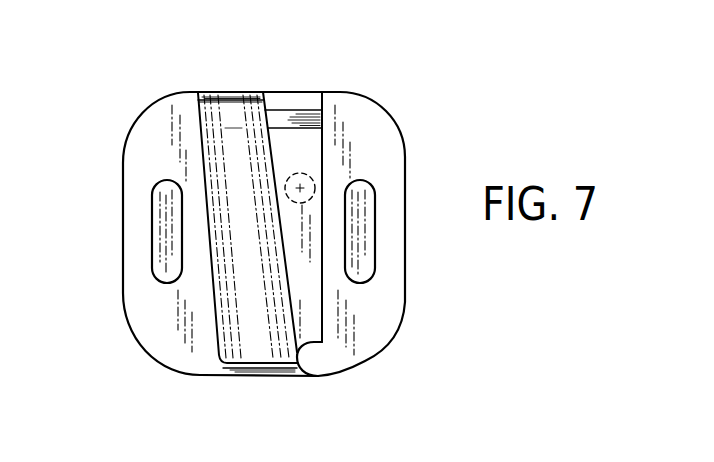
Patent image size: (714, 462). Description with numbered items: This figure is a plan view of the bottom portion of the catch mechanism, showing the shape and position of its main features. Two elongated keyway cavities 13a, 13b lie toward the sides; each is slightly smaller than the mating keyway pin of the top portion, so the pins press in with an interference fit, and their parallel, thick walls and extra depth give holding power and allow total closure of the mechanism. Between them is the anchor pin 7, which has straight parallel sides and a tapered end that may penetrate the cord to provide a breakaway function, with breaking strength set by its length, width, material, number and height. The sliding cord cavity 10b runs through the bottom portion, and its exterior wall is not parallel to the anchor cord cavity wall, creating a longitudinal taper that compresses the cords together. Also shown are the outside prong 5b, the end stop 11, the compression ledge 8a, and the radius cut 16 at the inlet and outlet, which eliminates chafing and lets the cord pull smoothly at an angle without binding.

The radius cut 16 is at (212, 95).
The sliding cord cavity 10b is at (233, 128).
The outside prong 5b is at (308, 100).
The anchor pin 7 is at (306, 178).
The keyway cavity 13a is at (165, 228).
The keyway cavity 13b is at (357, 233).
The compression ledge 8a is at (307, 287).
The end stop 11 is at (318, 362).